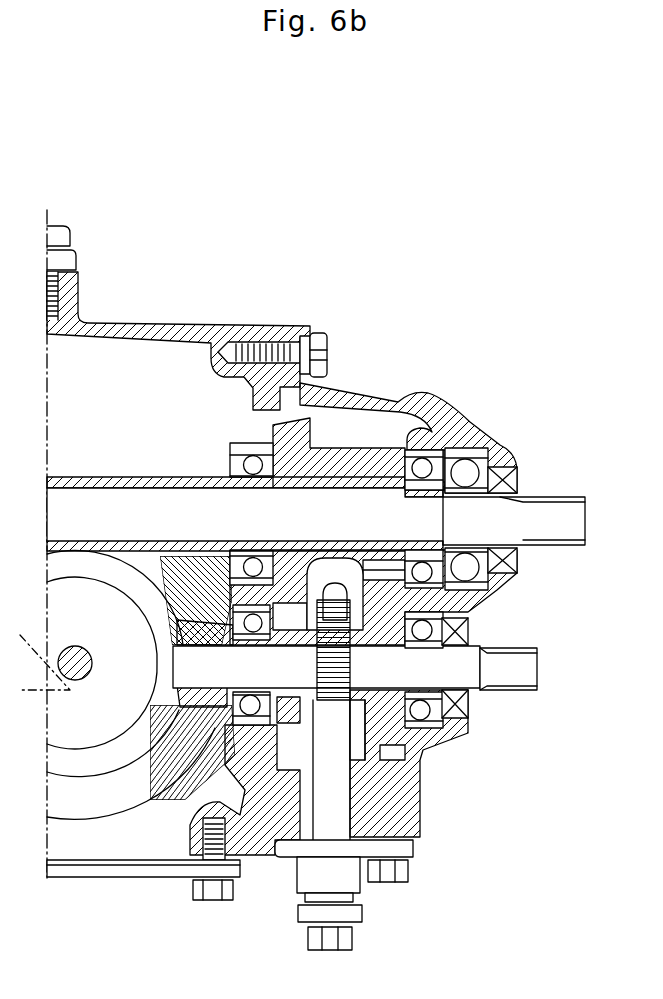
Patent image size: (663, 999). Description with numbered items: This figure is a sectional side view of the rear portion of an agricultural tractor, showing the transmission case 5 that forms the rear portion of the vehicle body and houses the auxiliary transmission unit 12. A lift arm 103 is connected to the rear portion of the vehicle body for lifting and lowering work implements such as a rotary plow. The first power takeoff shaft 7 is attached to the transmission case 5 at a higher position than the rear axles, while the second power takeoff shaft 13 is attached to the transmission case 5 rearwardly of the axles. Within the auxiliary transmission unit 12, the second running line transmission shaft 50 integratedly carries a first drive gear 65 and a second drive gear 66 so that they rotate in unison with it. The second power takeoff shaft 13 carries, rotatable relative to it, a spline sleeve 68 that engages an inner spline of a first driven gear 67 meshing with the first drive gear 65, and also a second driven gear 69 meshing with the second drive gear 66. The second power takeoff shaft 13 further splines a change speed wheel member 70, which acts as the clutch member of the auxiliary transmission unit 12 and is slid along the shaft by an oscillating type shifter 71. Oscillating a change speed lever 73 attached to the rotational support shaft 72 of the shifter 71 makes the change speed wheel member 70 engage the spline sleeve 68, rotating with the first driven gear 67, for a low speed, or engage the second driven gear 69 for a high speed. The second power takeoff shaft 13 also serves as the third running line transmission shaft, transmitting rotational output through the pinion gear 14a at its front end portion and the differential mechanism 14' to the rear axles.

The transmission case 5 is at (137, 322).
The first power takeoff shaft 7 is at (582, 525).
The auxiliary transmission unit 12 is at (352, 437).
The second power takeoff shaft 13 is at (530, 670).
The differential mechanism 14' is at (148, 736).
The pinion gear 14a is at (173, 613).
The second running line transmission shaft 50 is at (103, 477).
The first drive gear 65 is at (275, 405).
The second drive gear 66 is at (405, 395).
The first driven gear 67 is at (292, 725).
The spline sleeve 68 is at (258, 700).
The second driven gear 69 is at (393, 757).
The change speed wheel member 70 is at (340, 625).
The oscillating type shifter 71 is at (337, 740).
The rotational support shaft 72 is at (333, 823).
The change speed lever 73 is at (298, 912).
The lift arm 103 is at (80, 678).